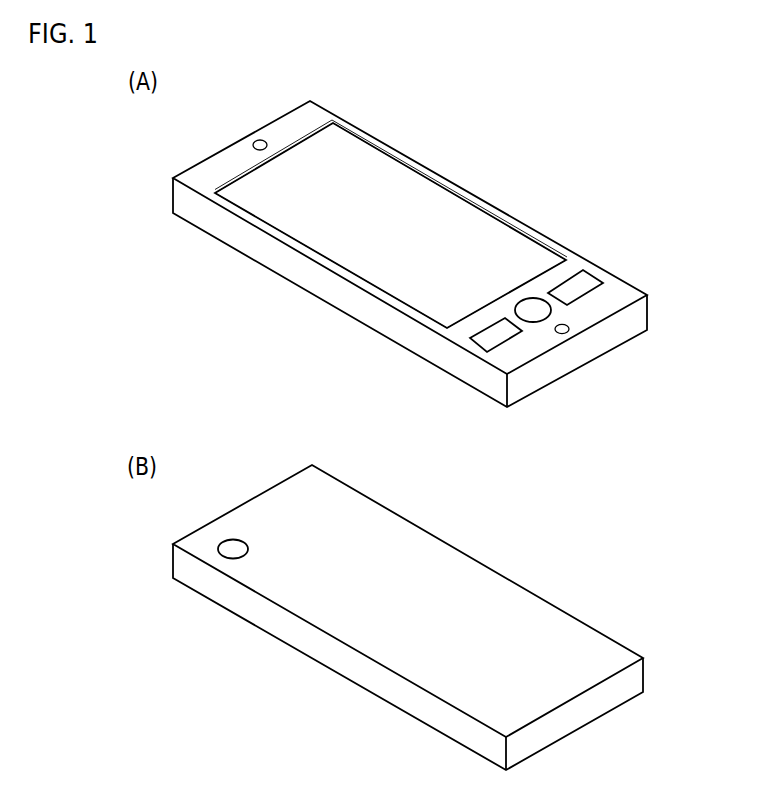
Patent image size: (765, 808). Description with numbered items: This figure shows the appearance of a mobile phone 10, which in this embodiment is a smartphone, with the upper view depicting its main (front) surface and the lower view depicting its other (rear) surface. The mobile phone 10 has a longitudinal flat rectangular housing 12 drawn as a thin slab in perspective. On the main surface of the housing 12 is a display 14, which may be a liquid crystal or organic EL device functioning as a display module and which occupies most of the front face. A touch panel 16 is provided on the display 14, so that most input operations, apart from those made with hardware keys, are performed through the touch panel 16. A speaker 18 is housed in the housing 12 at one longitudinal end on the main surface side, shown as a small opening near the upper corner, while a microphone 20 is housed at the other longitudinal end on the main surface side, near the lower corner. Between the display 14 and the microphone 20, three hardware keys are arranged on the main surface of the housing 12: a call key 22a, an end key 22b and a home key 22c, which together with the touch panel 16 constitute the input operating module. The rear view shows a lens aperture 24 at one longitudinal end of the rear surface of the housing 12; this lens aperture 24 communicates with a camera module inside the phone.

The mobile phone 10 is at (187, 136).
The housing 12 is at (300, 282).
The display 14 is at (370, 165).
The touch panel 16 is at (440, 200).
The speaker 18 is at (253, 145).
The microphone 20 is at (563, 334).
The call key 22a is at (482, 352).
The end key 22b is at (587, 273).
The home key 22c is at (551, 312).
The lens aperture 24 is at (235, 558).